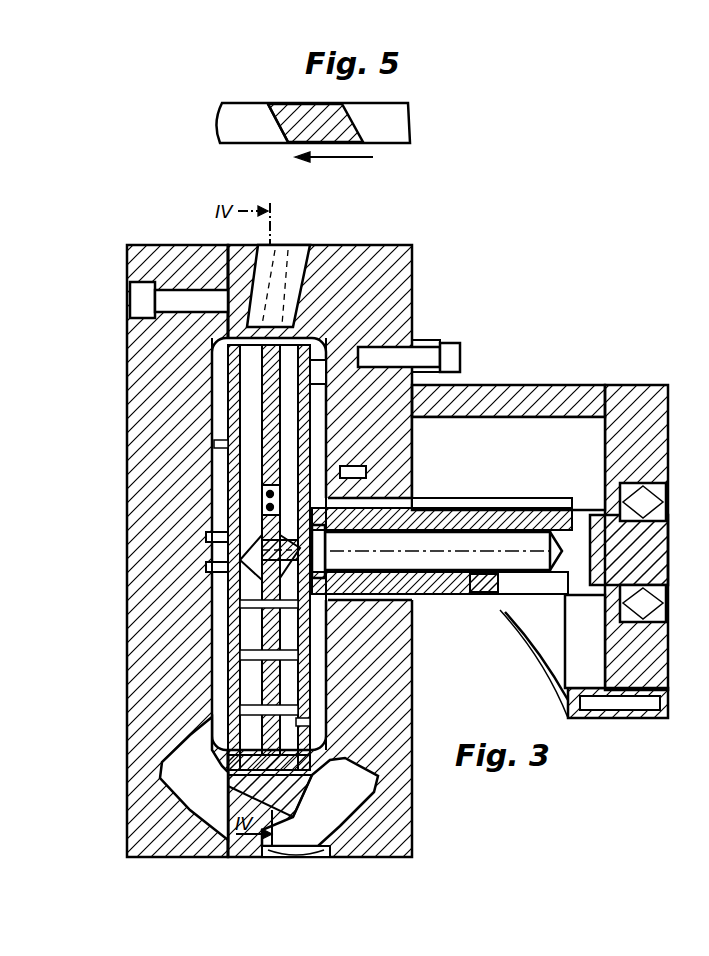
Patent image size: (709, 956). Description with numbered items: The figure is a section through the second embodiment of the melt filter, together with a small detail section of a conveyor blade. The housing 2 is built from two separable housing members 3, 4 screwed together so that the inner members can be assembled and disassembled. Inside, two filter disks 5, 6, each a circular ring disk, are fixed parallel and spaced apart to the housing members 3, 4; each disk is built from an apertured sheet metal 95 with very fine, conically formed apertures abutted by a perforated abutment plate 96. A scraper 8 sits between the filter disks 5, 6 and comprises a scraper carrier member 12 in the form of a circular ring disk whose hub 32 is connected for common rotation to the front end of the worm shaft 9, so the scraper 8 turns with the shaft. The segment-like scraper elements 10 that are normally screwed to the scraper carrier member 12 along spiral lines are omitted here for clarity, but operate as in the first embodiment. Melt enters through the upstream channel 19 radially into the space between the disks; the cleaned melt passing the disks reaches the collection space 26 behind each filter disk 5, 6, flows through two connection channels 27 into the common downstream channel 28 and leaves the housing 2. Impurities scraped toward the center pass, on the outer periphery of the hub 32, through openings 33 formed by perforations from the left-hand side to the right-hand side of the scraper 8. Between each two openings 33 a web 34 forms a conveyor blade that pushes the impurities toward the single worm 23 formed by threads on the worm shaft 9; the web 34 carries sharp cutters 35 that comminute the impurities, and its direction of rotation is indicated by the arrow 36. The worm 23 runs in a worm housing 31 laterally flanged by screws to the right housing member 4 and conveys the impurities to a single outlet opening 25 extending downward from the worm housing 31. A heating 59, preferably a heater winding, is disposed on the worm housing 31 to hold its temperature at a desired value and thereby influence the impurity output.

In FIG. 3, the housing 2 is at (127, 288).
In FIG. 3, the housing member 3 is at (165, 250).
In FIG. 3, the housing member 4 is at (357, 270).
In FIG. 3, the filter disk 5 is at (212, 393).
In FIG. 3, the filter disk 6 is at (320, 372).
In FIG. 3, the scraper 8 is at (262, 322).
In FIG. 3, the worm shaft 9 is at (590, 530).
In FIG. 3, the scraper elements 10 is at (265, 720).
In FIG. 3, the scraper carrier member 12 is at (228, 421).
In FIG. 3, the upstream channel 19 is at (292, 300).
In FIG. 3, the worm 23 is at (432, 606).
In FIG. 3, the outlet opening 25 is at (520, 600).
In FIG. 3, the collection space 26 is at (216, 375).
In FIG. 3, the connection channels 27 is at (185, 768).
In FIG. 3, the downstream channel 28 is at (295, 851).
In FIG. 3, the worm housing 31 is at (480, 604).
In FIG. 3, the hub 32 is at (265, 568).
In FIG. 5, the openings 33 is at (394, 125).
In FIG. 3, the openings 33 is at (262, 497).
In FIG. 5, the web 34 is at (293, 128).
In FIG. 5, the cutters 35 is at (270, 106).
In FIG. 5, the arrow 36 is at (334, 160).
In FIG. 3, the heating 59 is at (415, 608).
In FIG. 3, the apertured sheet metal 95 is at (228, 449).
In FIG. 3, the perforated abutment plate 96 is at (220, 506).